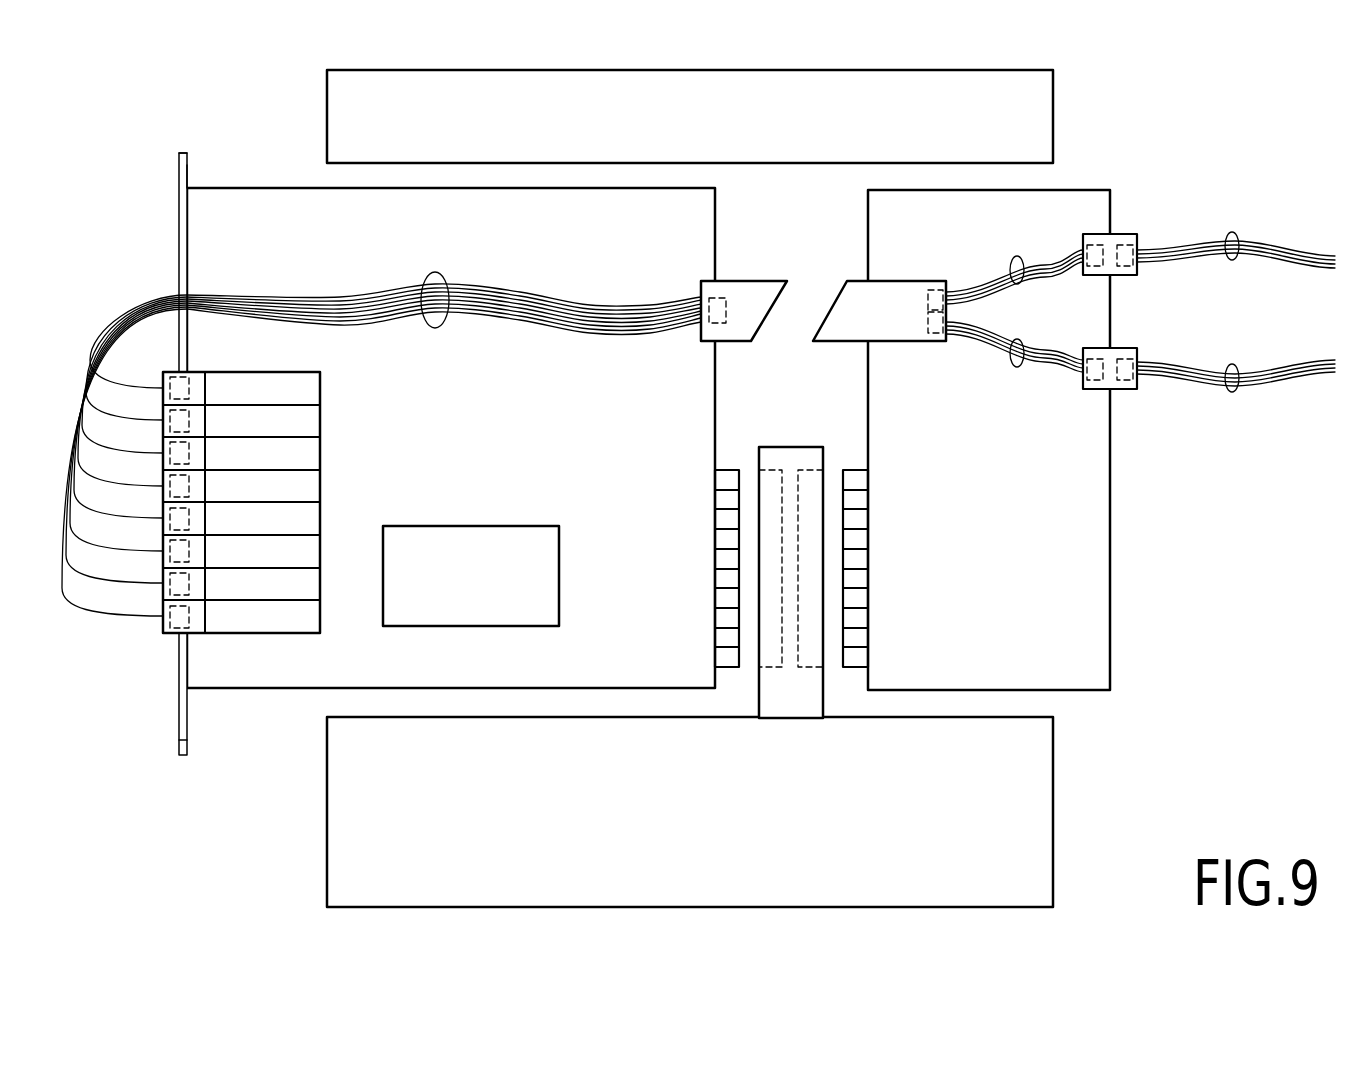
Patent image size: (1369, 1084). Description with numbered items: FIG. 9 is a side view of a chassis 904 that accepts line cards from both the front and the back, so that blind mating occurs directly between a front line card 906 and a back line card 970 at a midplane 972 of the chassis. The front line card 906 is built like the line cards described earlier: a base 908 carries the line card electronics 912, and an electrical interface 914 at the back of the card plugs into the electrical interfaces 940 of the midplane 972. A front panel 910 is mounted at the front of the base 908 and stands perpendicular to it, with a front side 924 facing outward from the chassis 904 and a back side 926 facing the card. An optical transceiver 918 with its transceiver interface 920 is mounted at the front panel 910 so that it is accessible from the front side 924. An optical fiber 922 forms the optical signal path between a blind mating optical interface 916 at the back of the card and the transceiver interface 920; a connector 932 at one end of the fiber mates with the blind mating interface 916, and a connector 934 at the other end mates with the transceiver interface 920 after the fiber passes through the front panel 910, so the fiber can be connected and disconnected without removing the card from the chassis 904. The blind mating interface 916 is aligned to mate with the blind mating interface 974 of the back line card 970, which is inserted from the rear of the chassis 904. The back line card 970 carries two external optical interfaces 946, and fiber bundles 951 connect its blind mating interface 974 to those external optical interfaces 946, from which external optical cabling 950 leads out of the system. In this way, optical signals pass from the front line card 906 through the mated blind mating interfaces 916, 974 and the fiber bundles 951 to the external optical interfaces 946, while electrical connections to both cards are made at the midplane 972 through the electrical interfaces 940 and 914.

The chassis 904 is at (1053, 115).
The line card 906 is at (115, 746).
The base 908 is at (258, 688).
The front panel 910 is at (179, 245).
The line card electronics 912 is at (559, 572).
The electrical interface 914 is at (728, 667).
The blind mating interface 916 is at (755, 281).
The optical transceiver 918 is at (320, 375).
The transceiver interface 920 is at (166, 628).
The optical fiber 922 is at (440, 273).
The front side 924 is at (174, 152).
The back side 926 is at (195, 178).
The connector 932 is at (722, 325).
The connector 934 is at (183, 637).
The electrical interfaces 940 is at (772, 667).
The external optical interfaces 946 is at (1132, 234).
The output fiber cable 950 is at (1232, 232).
The fiber bundles 951 is at (1012, 256).
The line card 970 is at (1170, 622).
The midplane 972 is at (793, 447).
The blind mating interface 974 is at (910, 341).